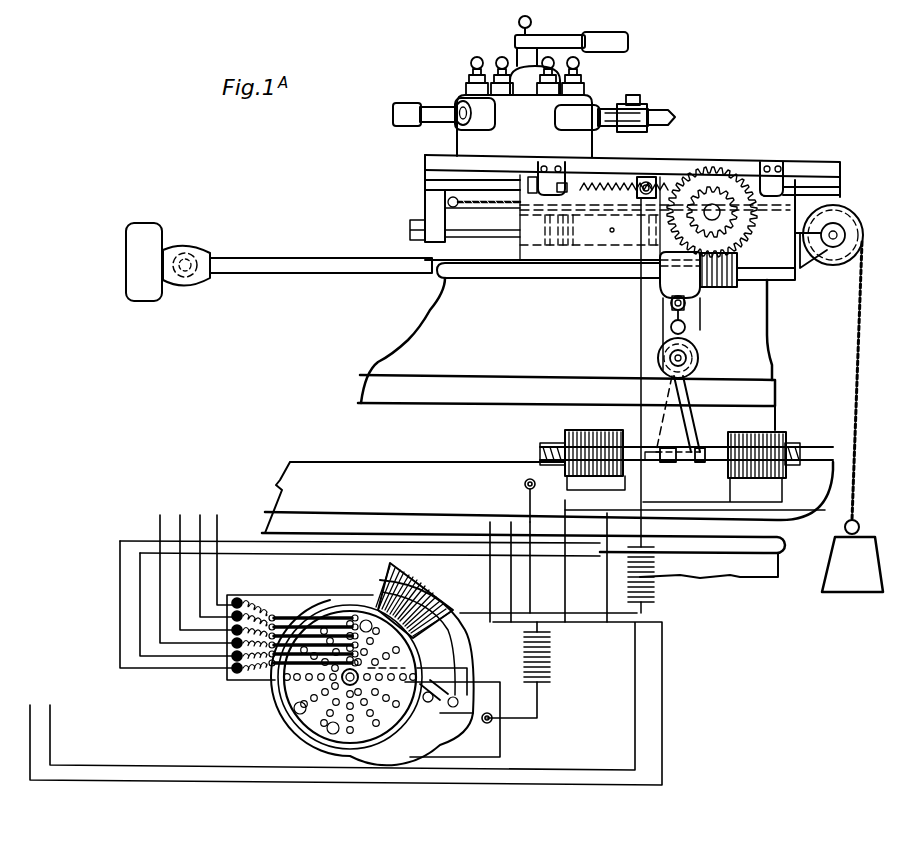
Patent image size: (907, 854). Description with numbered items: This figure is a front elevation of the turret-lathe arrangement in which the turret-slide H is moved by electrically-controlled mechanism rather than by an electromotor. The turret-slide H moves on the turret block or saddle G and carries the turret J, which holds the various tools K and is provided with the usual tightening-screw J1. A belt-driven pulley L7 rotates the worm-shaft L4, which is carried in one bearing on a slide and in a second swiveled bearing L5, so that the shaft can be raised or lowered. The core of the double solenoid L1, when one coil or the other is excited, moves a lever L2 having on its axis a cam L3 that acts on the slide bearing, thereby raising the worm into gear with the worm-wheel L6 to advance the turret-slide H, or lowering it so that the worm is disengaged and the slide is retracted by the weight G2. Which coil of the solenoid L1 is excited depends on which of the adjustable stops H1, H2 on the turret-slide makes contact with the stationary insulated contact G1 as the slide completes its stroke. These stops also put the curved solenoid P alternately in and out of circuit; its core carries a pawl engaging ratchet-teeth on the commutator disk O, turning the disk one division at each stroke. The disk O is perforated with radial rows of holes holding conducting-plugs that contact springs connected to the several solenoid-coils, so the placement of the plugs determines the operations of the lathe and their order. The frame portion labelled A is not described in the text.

The tightening-screw J1 is at (571, 36).
The turret J is at (524, 107).
The tools K is at (447, 110).
The turret-slide H is at (421, 160).
The adjustable stop H1 is at (583, 163).
The adjustable stop H2 is at (760, 170).
The stationary insulated contact G1 is at (655, 168).
The turret block or saddle G is at (765, 217).
The worm-wheel L6 is at (738, 234).
The worm-shaft L4 is at (612, 270).
The swiveled bearing L5 is at (297, 255).
The pulley L7 is at (144, 247).
The frame A is at (566, 342).
The cam L3 is at (690, 356).
The lever L2 is at (690, 402).
The double solenoid L1 is at (686, 466).
The weight G2 is at (852, 417).
The commutator disk O is at (310, 713).
The curved solenoid P is at (440, 598).